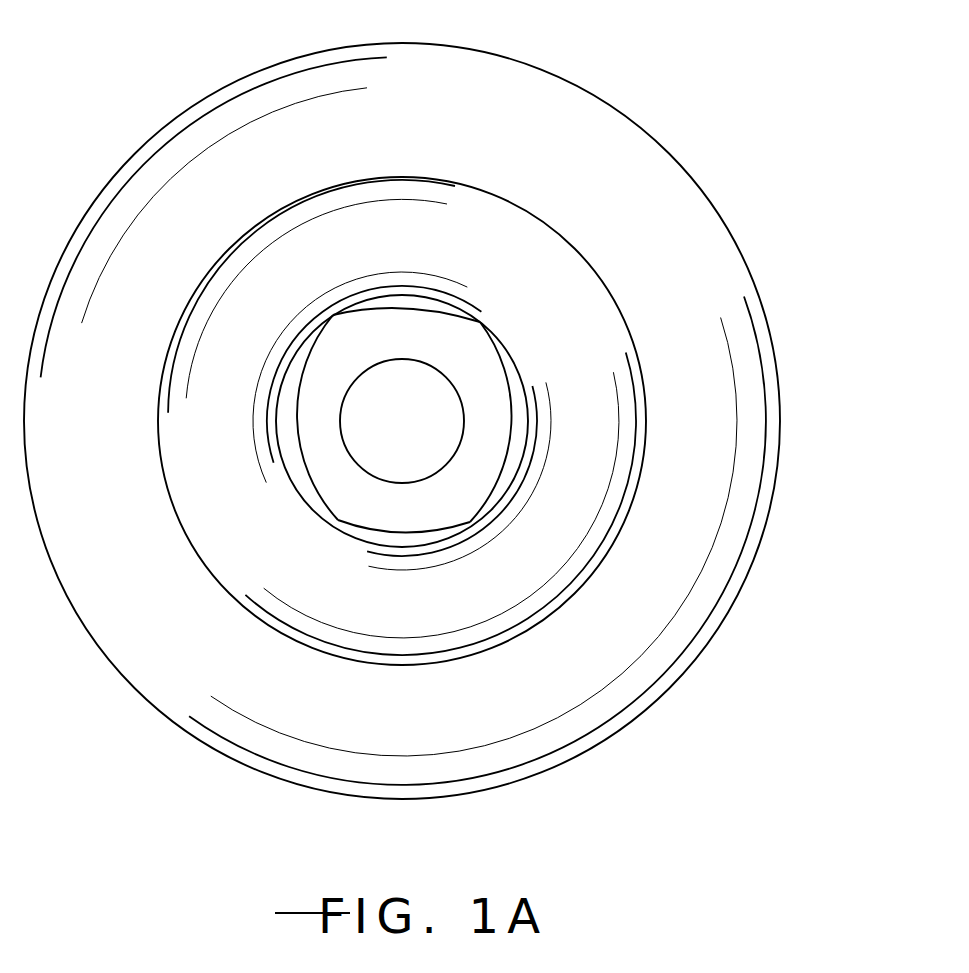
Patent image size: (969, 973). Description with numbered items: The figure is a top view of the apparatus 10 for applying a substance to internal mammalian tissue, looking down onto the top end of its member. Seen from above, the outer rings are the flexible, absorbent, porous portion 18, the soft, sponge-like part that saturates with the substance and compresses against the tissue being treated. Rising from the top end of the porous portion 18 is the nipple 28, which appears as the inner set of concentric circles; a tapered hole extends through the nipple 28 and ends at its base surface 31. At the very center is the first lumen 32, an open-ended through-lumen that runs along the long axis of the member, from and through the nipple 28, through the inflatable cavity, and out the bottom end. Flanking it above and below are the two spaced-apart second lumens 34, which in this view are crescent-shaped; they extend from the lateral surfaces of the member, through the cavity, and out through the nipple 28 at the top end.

The apparatus 10 is at (638, 78).
The flexible, absorbent, porous portion 18 is at (658, 175).
The nipple 28 is at (582, 352).
The base surface 31 is at (497, 433).
The first lumen 32 is at (432, 440).
The second lumen 34 is at (413, 308).